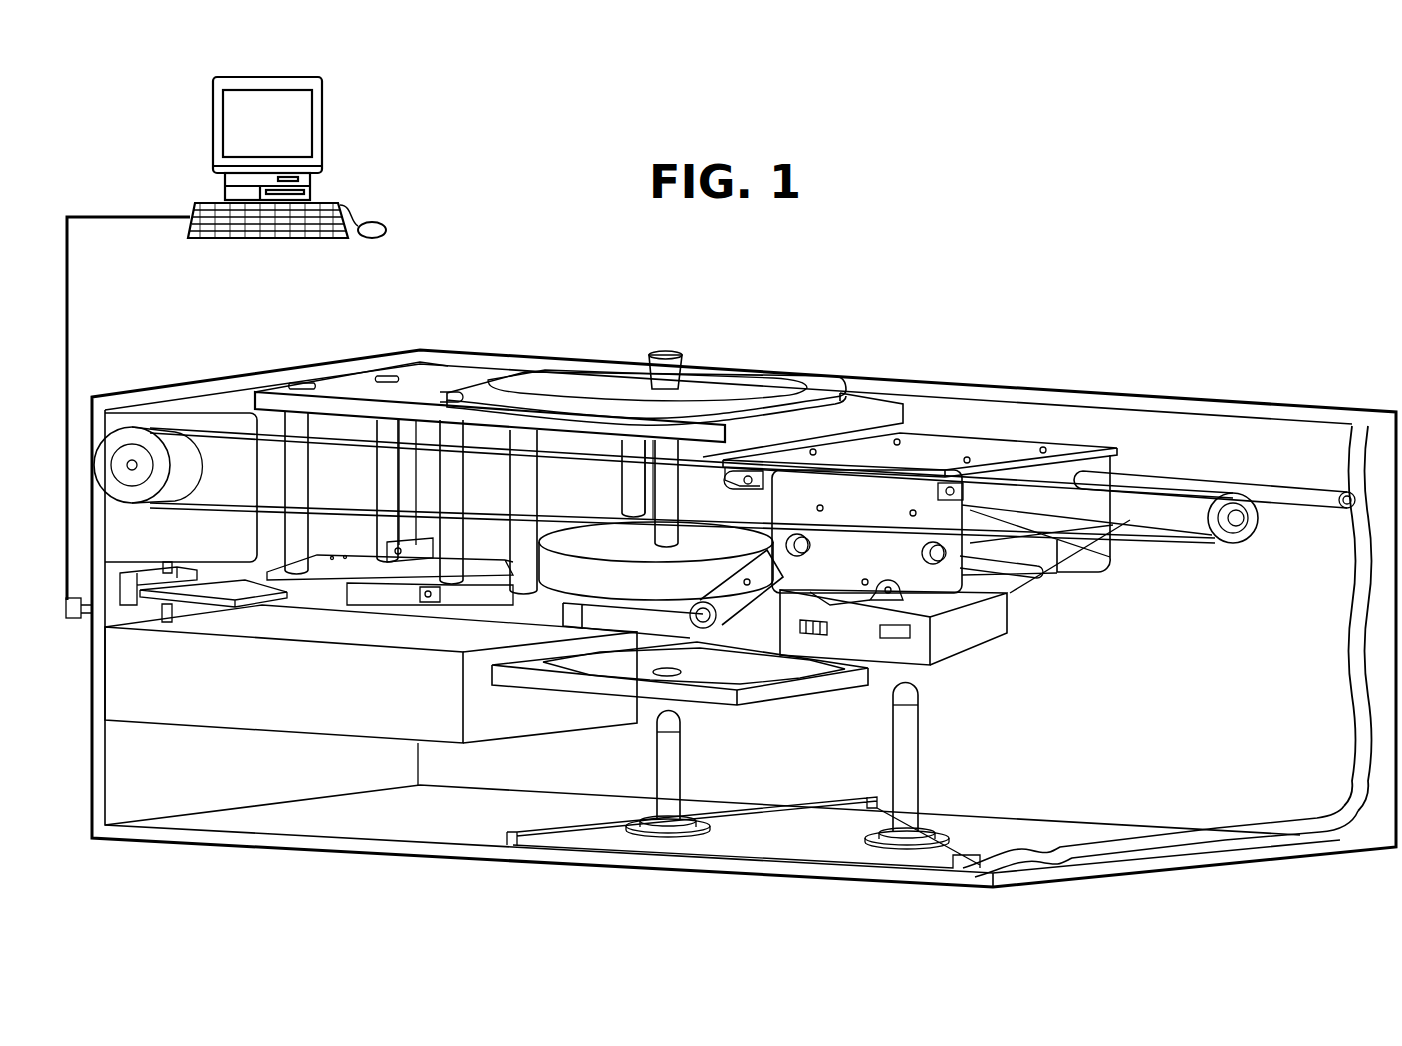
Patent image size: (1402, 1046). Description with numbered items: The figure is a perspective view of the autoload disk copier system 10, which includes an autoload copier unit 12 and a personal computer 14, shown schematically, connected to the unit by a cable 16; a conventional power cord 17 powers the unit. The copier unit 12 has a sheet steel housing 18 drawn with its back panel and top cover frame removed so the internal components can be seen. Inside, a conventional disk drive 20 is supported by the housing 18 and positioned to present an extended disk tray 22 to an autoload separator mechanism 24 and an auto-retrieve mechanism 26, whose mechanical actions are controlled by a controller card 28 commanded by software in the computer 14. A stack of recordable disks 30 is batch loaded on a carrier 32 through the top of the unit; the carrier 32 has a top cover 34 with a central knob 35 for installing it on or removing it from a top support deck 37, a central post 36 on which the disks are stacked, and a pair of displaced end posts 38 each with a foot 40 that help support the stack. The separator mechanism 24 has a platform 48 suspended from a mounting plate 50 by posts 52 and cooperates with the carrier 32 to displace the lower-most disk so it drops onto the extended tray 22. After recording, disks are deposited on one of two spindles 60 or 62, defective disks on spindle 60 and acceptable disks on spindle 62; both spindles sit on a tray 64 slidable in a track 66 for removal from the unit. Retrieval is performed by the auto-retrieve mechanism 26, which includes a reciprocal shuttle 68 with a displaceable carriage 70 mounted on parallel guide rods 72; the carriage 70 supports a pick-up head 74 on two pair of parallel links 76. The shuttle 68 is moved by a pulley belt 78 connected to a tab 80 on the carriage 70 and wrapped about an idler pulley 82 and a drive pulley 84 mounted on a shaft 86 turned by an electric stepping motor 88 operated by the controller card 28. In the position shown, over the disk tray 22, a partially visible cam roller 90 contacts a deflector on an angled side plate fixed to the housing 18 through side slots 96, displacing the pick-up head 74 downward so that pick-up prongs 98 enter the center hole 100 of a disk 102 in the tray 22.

The autoload disk copier system 10 is at (527, 352).
The autoload copier unit 12 is at (935, 384).
The personal computer 14 is at (327, 147).
The cable 16 is at (70, 302).
The power cord 17 is at (92, 612).
The housing 18 is at (1148, 398).
The disk drive 20 is at (240, 733).
The disk tray 22 is at (807, 685).
The autoload separator mechanism 24 is at (440, 360).
The auto-retrieve mechanism 26 is at (947, 450).
The controller card 28 is at (222, 592).
The recordable disks 30 is at (700, 560).
The carrier 32 is at (735, 382).
The top cover 34 is at (580, 385).
The central knob 35 is at (672, 356).
The central post 36 is at (690, 490).
The top support deck 37 is at (385, 375).
The end posts 38 is at (598, 483).
The foot 40 is at (513, 490).
The platform 48 is at (387, 550).
The mounting plate 50 is at (302, 380).
The posts 52 is at (350, 560).
The spindle 60 is at (655, 780).
The spindle 62 is at (922, 760).
The tray 64 is at (780, 840).
The track 66 is at (1275, 822).
The reciprocal shuttle 68 is at (1062, 448).
The carriage 70 is at (855, 516).
The guide rods 72 is at (1190, 490).
The pick-up head 74 is at (617, 625).
The parallel links 76 is at (780, 576).
The pulley belt 78 is at (1160, 541).
The tab 80 is at (797, 457).
The idler pulley 82 is at (1258, 528).
The drive pulley 84 is at (118, 422).
The shaft 86 is at (132, 472).
The electric stepping motor 88 is at (220, 422).
The cam roller 90 is at (900, 648).
The side slots 96 is at (912, 632).
The pick-up prongs 98 is at (653, 648).
The center hole 100 is at (683, 672).
The disk 102 is at (753, 672).